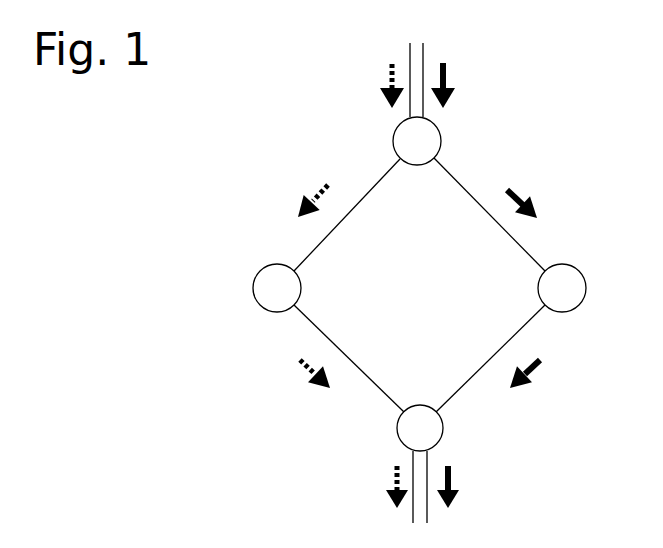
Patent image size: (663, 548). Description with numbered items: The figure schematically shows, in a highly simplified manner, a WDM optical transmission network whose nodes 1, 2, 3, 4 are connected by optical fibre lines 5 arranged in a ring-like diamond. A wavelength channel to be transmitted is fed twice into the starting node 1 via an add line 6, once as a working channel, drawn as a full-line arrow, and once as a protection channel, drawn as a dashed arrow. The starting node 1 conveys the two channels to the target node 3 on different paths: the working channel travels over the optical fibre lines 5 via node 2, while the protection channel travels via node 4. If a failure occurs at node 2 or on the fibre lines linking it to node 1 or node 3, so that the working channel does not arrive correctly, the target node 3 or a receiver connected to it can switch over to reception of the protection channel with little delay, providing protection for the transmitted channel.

The starting node 1 is at (415, 138).
The node 2 is at (572, 293).
The target node 3 is at (425, 435).
The node 4 is at (275, 288).
The optical fibre lines 5 is at (317, 322).
The add line 6 is at (408, 67).